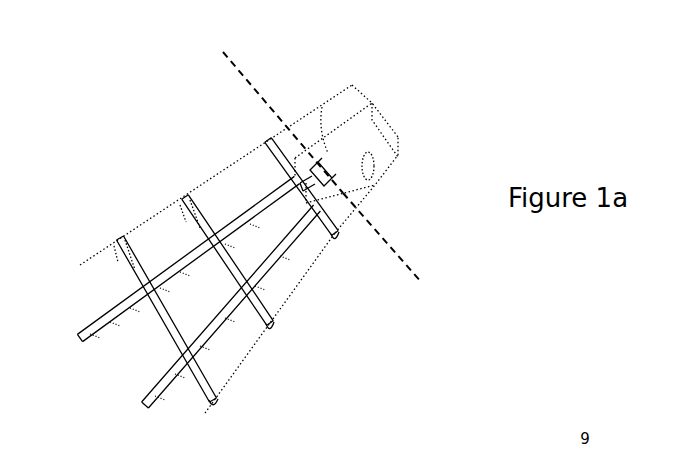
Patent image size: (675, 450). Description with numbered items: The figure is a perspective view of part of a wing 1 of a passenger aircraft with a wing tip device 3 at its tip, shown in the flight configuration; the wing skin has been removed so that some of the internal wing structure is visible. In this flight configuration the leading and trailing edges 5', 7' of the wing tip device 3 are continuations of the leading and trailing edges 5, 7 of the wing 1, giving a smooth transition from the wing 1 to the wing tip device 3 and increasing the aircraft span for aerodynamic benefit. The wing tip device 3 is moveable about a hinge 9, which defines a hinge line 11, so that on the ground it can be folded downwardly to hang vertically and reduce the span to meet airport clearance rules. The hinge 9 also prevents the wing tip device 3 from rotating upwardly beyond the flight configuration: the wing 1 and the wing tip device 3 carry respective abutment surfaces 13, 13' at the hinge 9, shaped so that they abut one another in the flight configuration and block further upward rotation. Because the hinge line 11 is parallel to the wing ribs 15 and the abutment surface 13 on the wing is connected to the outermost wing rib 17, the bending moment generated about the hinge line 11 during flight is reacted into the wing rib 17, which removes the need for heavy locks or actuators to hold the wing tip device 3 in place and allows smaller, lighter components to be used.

The wing 1 is at (122, 167).
The wing tip device 3 is at (300, 82).
The leading edge of the wing 5 is at (263, 306).
The leading edge of the wing tip device 5' is at (373, 153).
The trailing edge of the wing 7 is at (127, 295).
The trailing edge of the wing tip device 7' is at (257, 152).
The hinge 9 is at (352, 228).
The hinge line 11 is at (397, 253).
The abutment surface 13 is at (361, 109).
The abutment surface 13' is at (361, 109).
The wing ribs 15 is at (333, 235).
The outermost wing rib 17 is at (300, 187).